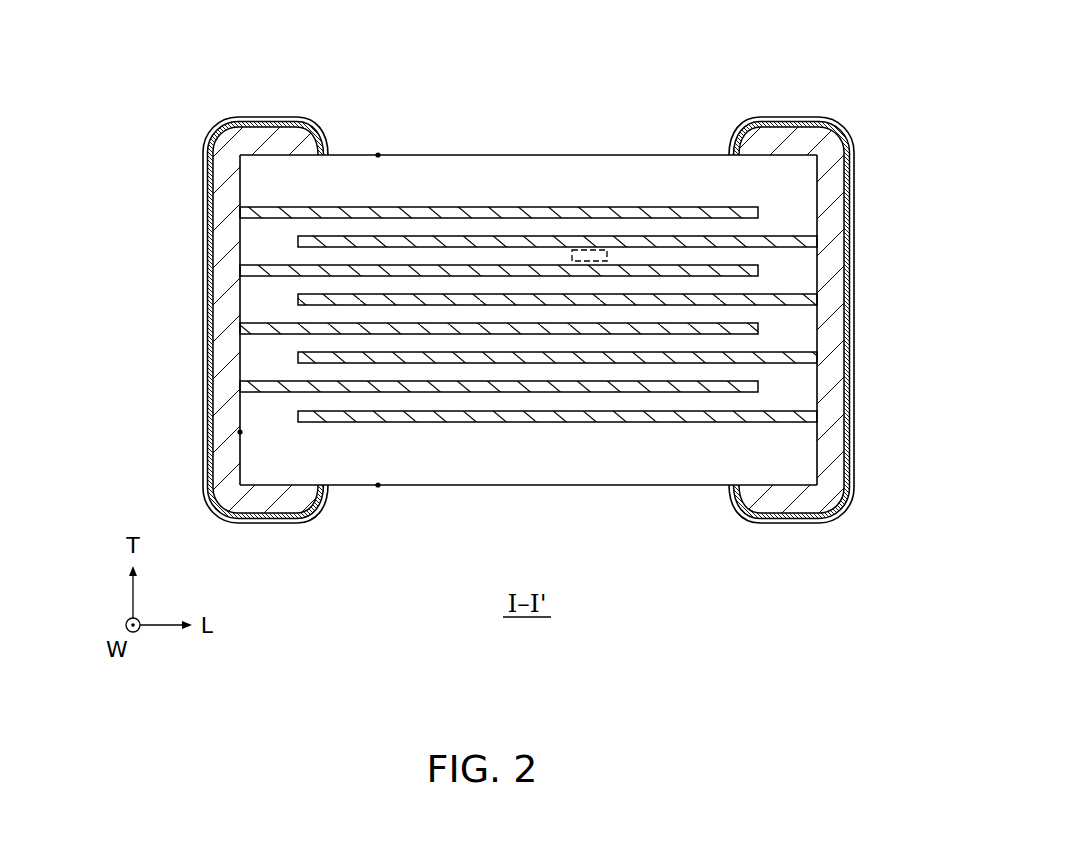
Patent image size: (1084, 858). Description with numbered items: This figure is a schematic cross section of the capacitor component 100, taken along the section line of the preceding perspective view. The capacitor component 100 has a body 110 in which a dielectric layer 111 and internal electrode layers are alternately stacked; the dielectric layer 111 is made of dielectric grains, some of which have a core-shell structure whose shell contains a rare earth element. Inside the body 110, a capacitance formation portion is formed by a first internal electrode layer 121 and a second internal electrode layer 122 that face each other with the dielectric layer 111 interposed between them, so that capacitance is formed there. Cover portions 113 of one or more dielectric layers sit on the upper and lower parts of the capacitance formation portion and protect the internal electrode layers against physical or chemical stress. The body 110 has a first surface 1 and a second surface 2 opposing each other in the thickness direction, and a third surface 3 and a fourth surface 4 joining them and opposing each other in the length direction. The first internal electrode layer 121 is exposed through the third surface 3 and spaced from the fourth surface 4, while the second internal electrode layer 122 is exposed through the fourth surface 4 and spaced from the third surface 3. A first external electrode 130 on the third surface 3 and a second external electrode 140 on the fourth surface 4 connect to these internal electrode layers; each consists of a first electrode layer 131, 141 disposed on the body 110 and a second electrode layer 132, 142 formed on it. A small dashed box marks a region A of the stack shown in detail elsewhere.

The capacitor component 100 is at (539, 46).
The body 110 is at (616, 148).
The dielectric layer 111 is at (519, 225).
The cover portion 113 is at (441, 178).
The first internal electrode layer 121 is at (597, 246).
The second internal electrode layer 122 is at (697, 243).
The first external electrode 130 is at (207, 578).
The first electrode layer 131 is at (273, 510).
The second electrode layer 132 is at (236, 530).
The second external electrode 140 is at (765, 578).
The first electrode layer 141 is at (785, 506).
The second electrode layer 142 is at (819, 529).
The first surface 1 is at (378, 488).
The second surface 2 is at (378, 153).
The third surface 3 is at (238, 432).
The fourth surface 4 is at (818, 433).
The region A is at (597, 249).